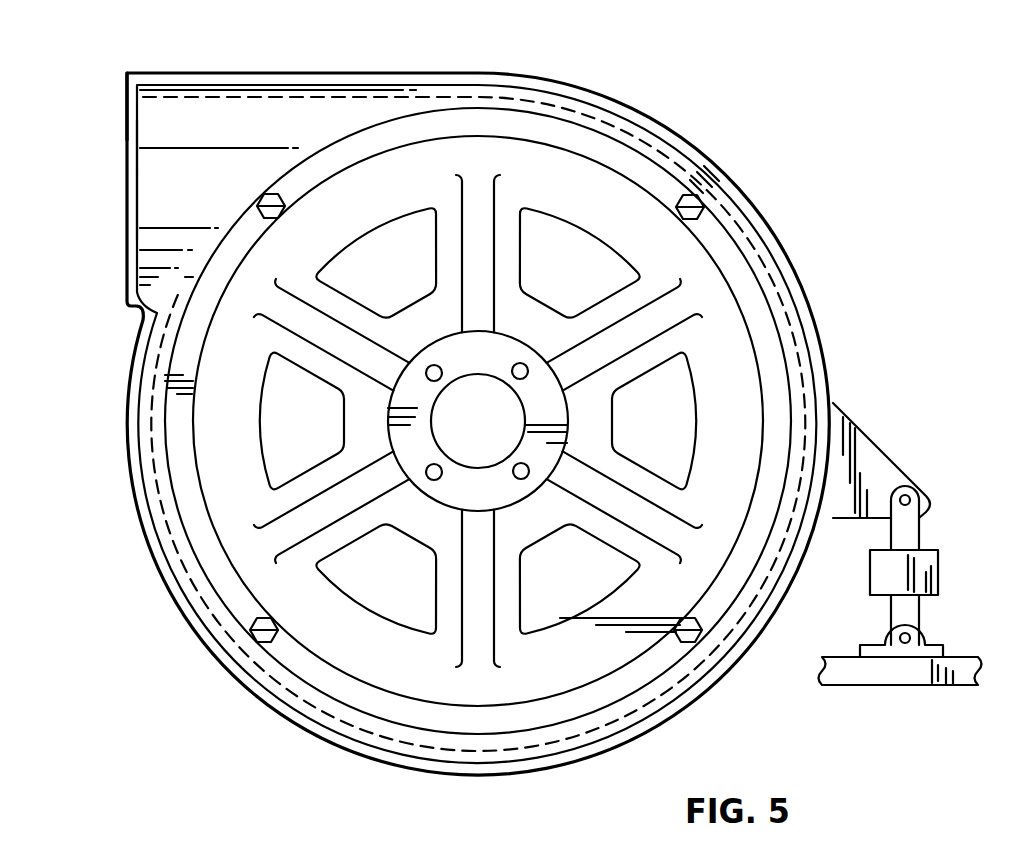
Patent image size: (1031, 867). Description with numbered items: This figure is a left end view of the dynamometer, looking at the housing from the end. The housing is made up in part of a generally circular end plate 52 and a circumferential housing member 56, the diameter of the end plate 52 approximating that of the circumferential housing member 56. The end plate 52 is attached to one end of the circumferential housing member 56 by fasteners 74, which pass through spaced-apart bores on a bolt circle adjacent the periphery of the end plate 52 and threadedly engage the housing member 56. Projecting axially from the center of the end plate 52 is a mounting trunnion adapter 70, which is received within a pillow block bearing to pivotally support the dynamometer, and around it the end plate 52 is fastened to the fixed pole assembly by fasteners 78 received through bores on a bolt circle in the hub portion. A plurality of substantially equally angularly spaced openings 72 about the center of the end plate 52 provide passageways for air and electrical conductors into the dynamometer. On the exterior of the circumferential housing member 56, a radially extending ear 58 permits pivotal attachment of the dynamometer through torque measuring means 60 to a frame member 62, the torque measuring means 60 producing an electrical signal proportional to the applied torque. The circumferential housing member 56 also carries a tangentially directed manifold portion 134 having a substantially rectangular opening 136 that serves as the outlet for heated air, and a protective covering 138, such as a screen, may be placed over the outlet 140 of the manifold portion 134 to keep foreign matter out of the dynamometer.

The end plate 52 is at (642, 205).
The circumferential housing member 56 is at (333, 93).
The radially extending ear 58 is at (882, 462).
The torque measuring means 60 is at (938, 571).
The frame member 62 is at (932, 673).
The mounting trunnion adapter 70 is at (448, 413).
The openings 72 is at (576, 280).
The fasteners 74 is at (250, 636).
The fasteners 78 is at (524, 367).
The tangentially directed manifold portion 134 is at (256, 145).
The substantially rectangular opening 136 is at (153, 185).
The protective covering 138 is at (130, 119).
The outlet 140 is at (127, 140).